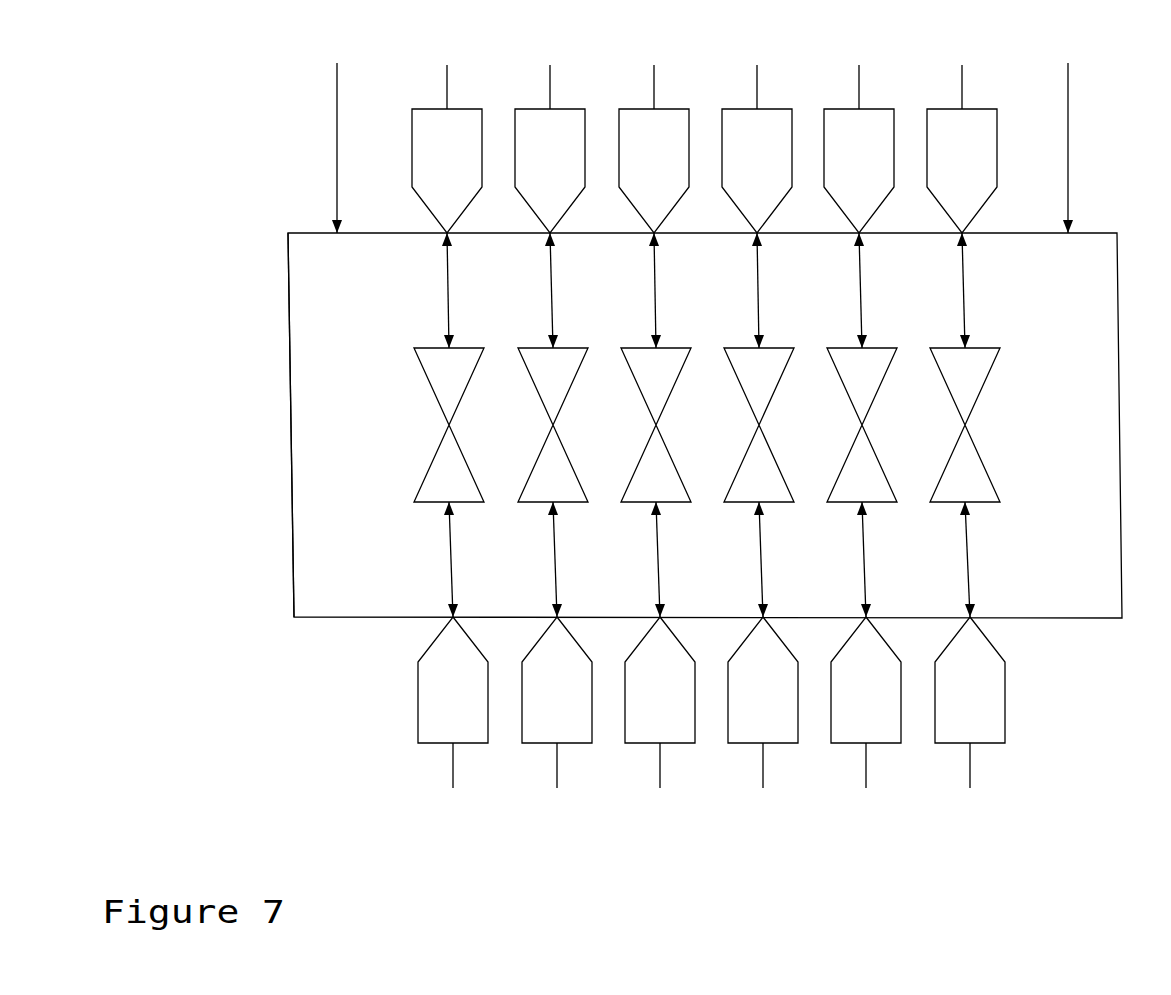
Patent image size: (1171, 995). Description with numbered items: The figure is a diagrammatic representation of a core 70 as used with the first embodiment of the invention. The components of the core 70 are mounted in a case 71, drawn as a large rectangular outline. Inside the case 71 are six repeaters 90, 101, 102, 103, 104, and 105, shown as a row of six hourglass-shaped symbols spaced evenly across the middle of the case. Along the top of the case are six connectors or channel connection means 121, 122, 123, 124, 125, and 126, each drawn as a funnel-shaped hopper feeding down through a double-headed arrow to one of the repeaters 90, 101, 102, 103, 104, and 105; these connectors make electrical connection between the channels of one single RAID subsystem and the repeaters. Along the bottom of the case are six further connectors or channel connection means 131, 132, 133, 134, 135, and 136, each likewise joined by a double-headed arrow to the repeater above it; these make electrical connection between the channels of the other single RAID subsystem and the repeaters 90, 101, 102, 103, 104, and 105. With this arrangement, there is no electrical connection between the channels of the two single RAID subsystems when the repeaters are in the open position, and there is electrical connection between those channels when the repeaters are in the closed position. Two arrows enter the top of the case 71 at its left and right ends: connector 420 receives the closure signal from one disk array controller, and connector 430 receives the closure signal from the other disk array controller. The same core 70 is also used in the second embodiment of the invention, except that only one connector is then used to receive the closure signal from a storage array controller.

The core 70 is at (342, 618).
The case 71 is at (290, 405).
The repeater 90 is at (438, 430).
The repeater 101 is at (542, 430).
The repeater 102 is at (645, 430).
The repeater 103 is at (748, 430).
The repeater 104 is at (851, 430).
The repeater 105 is at (954, 430).
The channel connection means 121 is at (447, 137).
The channel connection means 122 is at (550, 137).
The channel connection means 123 is at (654, 137).
The channel connection means 124 is at (757, 137).
The channel connection means 125 is at (859, 137).
The channel connection means 126 is at (962, 137).
The channel connection means 131 is at (453, 722).
The channel connection means 132 is at (557, 722).
The channel connection means 133 is at (660, 722).
The channel connection means 134 is at (763, 722).
The channel connection means 135 is at (866, 722).
The channel connection means 136 is at (970, 722).
The connector 420 is at (337, 153).
The connector 430 is at (1068, 152).